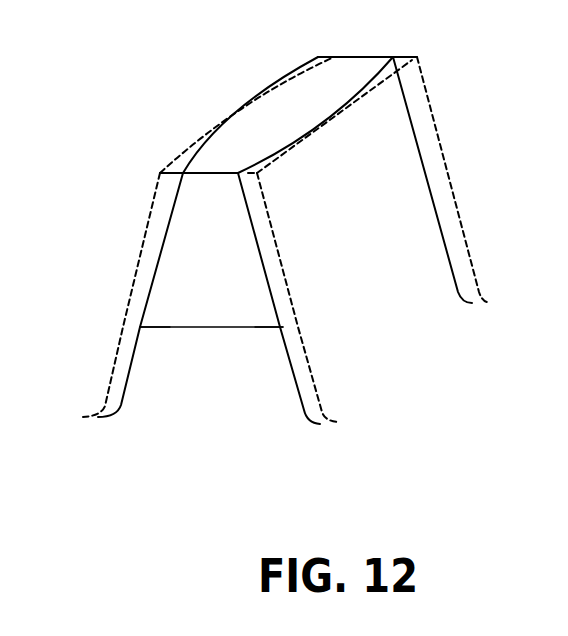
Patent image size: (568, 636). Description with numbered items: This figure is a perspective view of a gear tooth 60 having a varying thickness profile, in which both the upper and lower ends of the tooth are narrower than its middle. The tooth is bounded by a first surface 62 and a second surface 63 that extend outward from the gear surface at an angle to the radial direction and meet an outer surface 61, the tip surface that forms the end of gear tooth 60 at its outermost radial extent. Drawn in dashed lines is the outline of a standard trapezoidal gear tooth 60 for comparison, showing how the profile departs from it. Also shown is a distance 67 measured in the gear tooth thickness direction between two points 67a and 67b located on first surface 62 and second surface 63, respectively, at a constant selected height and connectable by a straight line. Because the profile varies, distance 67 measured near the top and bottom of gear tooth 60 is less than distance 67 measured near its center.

The gear tooth 60 is at (276, 262).
The outer surface 61 is at (287, 117).
The first surface 62 is at (427, 248).
The second surface 63 is at (165, 232).
The distance 67 is at (209, 353).
The point 67a is at (280, 327).
The point 67b is at (138, 325).